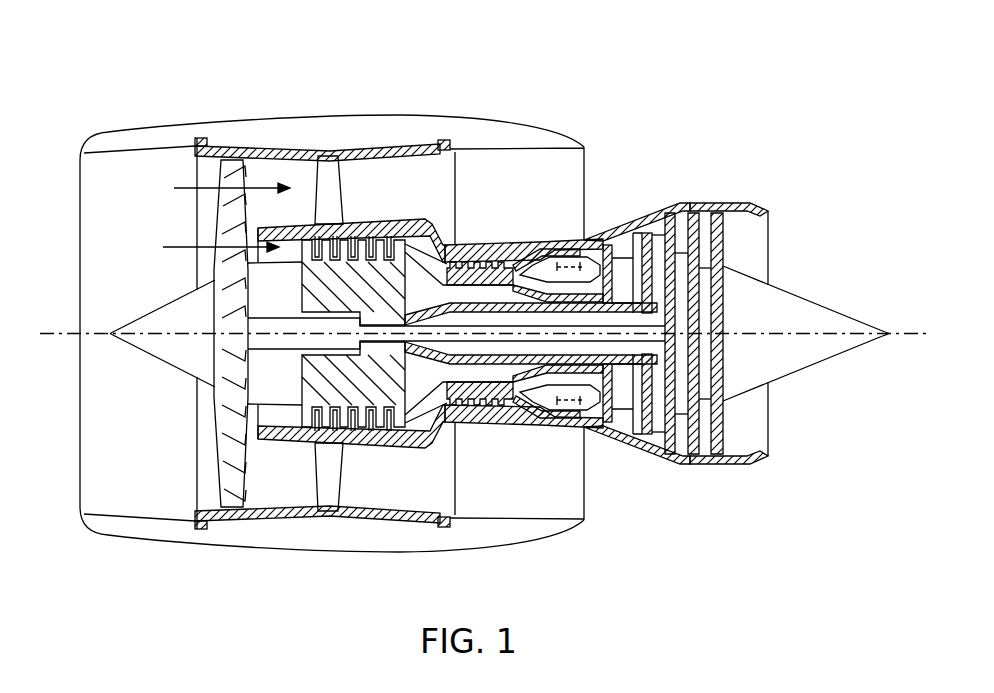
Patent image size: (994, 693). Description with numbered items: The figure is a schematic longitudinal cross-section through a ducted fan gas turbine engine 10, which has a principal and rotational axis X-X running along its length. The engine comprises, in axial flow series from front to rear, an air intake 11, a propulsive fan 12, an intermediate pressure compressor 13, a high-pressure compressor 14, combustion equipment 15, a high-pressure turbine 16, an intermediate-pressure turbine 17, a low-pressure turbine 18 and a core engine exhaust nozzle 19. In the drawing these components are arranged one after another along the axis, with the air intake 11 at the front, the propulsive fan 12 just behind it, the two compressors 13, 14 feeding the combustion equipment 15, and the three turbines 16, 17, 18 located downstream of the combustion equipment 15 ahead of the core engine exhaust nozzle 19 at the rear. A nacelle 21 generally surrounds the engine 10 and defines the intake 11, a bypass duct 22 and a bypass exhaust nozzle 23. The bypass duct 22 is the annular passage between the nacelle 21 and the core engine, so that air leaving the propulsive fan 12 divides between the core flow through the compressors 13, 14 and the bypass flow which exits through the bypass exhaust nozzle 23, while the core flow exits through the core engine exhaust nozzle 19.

The ducted fan gas turbine engine 10 is at (485, 277).
The air intake 11 is at (133, 153).
The propulsive fan 12 is at (227, 467).
The intermediate pressure compressor 13 is at (373, 428).
The high-pressure compressor 14 is at (493, 252).
The combustion equipment 15 is at (550, 402).
The high-pressure turbine 16 is at (603, 424).
The intermediate-pressure turbine 17 is at (640, 233).
The low-pressure turbine 18 is at (650, 443).
The core engine exhaust nozzle 19 is at (753, 207).
The nacelle 21 is at (372, 130).
The bypass duct 22 is at (538, 188).
The bypass exhaust nozzle 23 is at (584, 147).